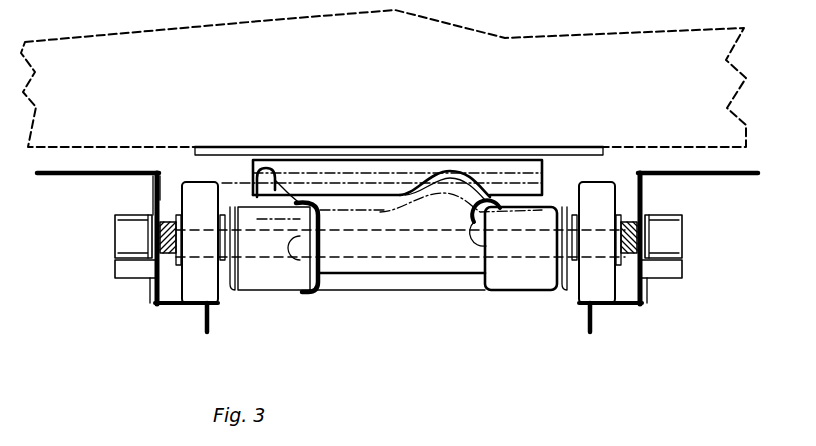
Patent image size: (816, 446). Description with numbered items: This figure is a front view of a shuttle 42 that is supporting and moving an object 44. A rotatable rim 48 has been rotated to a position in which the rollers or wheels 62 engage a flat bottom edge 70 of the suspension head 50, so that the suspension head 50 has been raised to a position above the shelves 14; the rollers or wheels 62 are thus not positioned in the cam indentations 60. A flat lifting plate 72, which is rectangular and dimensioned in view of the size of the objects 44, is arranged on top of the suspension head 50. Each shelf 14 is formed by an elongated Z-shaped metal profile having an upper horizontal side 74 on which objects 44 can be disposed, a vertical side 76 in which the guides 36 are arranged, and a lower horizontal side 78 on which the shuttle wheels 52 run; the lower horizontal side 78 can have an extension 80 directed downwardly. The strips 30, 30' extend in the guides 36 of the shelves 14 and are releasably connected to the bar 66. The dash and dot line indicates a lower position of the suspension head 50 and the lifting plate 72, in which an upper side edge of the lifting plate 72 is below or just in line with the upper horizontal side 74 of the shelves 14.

The shelf 14 is at (60, 175).
The strip 30 is at (126, 246).
The strip 30' is at (677, 246).
The guide 36 is at (162, 172).
The shuttle 42 is at (466, 101).
The object 44 is at (383, 78).
The rotatable rim 48 is at (453, 268).
The suspension head 50 is at (333, 167).
The shuttle wheel 52 is at (597, 193).
The cam indentation 60 is at (433, 168).
The roller 62 is at (316, 262).
The bar 66 is at (205, 240).
The flat bottom edge 70 is at (357, 195).
The lifting plate 72 is at (553, 150).
The upper horizontal side 74 is at (110, 172).
The vertical side 76 is at (153, 203).
The lower horizontal side 78 is at (173, 307).
The extension 80 is at (209, 321).